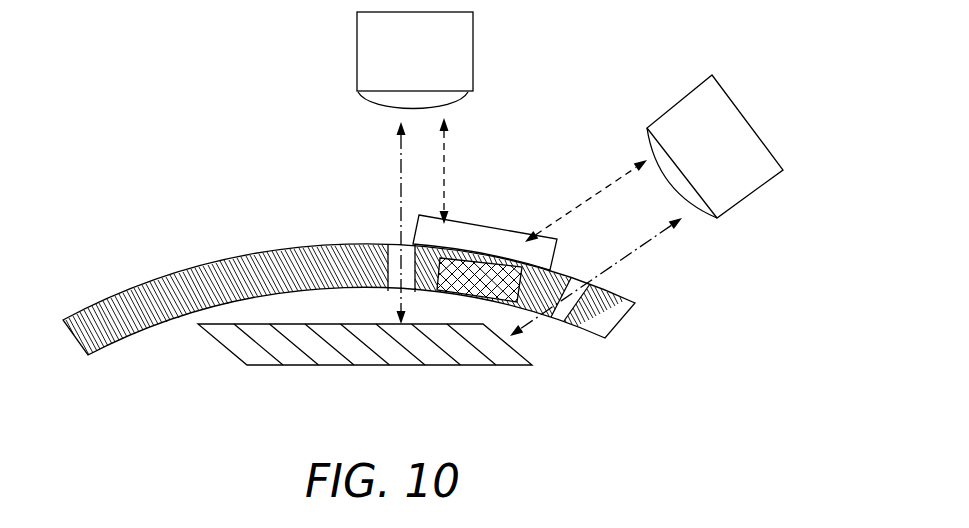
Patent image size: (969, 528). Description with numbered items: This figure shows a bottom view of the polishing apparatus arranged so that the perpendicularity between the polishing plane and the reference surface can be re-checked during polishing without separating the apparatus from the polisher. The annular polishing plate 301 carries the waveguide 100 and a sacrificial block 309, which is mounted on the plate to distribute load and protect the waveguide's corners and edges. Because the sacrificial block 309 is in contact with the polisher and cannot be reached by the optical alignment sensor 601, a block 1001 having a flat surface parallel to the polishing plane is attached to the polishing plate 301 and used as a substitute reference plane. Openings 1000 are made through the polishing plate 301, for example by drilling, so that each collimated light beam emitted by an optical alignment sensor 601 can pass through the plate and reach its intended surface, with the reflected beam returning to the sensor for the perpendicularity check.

The waveguide 100 is at (551, 358).
The polishing plate 301 is at (398, 259).
The sacrificial block 309 is at (490, 264).
The optical alignment sensor 601 is at (435, 64).
The opening 1000 is at (381, 227).
The block 1001 is at (468, 225).